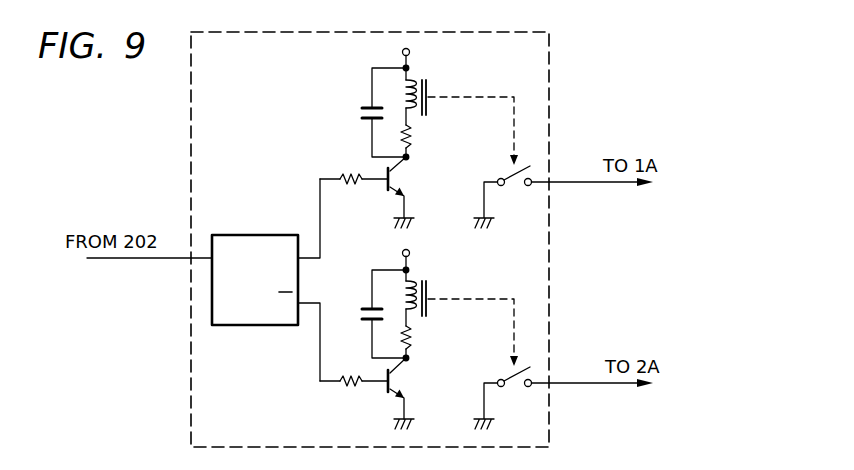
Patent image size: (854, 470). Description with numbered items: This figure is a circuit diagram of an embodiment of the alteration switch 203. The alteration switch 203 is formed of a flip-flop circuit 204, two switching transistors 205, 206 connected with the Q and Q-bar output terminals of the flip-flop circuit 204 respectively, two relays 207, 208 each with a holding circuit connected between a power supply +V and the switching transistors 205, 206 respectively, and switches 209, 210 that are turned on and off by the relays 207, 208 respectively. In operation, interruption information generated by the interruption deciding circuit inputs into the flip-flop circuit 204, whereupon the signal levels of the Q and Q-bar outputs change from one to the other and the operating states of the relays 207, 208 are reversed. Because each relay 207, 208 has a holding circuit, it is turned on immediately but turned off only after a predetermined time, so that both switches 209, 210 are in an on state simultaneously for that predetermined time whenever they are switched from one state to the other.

The alteration switch 203 is at (549, 76).
The flip-flop circuit 204 is at (281, 234).
The switching transistor 205 is at (396, 178).
The switching transistor 206 is at (396, 381).
The relay 207 is at (430, 82).
The relay 208 is at (428, 286).
The switch 209 is at (512, 189).
The switch 210 is at (512, 390).